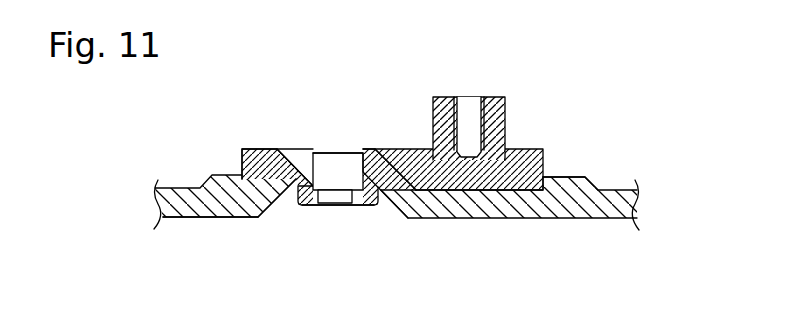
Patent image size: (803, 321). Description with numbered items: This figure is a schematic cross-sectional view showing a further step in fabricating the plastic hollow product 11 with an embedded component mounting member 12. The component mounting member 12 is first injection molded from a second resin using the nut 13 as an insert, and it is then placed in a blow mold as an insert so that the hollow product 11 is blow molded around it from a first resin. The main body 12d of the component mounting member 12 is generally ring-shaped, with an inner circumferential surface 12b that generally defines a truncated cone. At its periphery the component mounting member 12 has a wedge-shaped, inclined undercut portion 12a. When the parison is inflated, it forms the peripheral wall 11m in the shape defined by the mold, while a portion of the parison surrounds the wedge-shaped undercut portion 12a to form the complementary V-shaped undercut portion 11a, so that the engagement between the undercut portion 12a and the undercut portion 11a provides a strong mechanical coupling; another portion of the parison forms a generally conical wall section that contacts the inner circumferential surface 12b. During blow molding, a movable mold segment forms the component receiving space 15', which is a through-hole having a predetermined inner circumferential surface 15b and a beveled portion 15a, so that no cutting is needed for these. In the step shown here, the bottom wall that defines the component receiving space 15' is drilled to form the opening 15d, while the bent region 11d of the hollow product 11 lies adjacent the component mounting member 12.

The plastic hollow product 11 is at (581, 219).
The V-shaped undercut portion 11a is at (553, 177).
The peripheral wall 11m is at (203, 218).
The bent portion of plate 11d is at (294, 183).
The component mounting member 12 is at (491, 200).
The wedge-shaped undercut portion 12a is at (541, 195).
The inner circumferential surface 12b is at (443, 192).
The main body 12d is at (260, 147).
The nut 13 is at (471, 107).
The component receiving space 15' is at (329, 146).
The beveled portion 15a is at (358, 151).
The inner circumferential surface 15b is at (352, 192).
The opening 15d is at (334, 204).